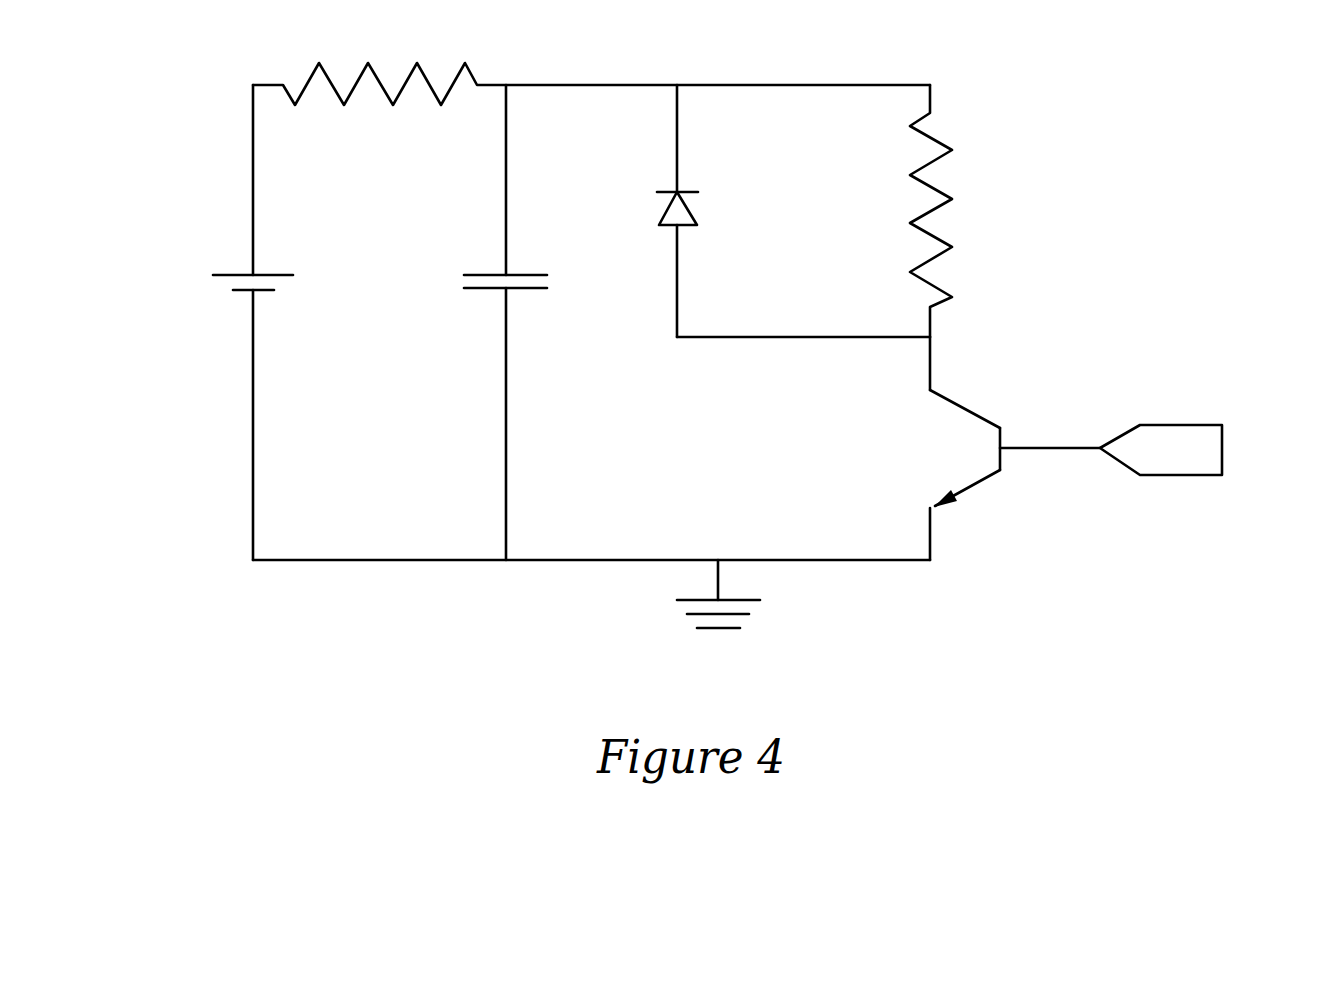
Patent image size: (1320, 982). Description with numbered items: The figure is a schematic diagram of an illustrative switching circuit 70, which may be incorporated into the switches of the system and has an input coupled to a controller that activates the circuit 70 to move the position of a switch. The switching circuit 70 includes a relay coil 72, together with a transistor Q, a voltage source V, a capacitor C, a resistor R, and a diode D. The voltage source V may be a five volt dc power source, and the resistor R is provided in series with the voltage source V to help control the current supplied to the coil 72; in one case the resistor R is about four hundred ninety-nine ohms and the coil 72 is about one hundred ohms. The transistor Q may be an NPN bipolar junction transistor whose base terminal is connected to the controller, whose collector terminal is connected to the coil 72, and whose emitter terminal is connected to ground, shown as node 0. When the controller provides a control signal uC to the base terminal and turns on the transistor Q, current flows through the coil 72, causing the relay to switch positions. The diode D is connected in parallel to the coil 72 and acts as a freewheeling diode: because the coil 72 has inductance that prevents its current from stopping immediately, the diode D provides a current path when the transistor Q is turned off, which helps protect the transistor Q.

The switching circuit 70 is at (697, 342).
The Rcoil 72 is at (897, 193).
The ground node 0 is at (730, 594).
The resistor R is at (591, 101).
The capacitor C is at (505, 322).
The diode D is at (781, 211).
The transistor Q is at (965, 448).
The voltage source V is at (214, 322).
The control signal uC is at (1130, 450).